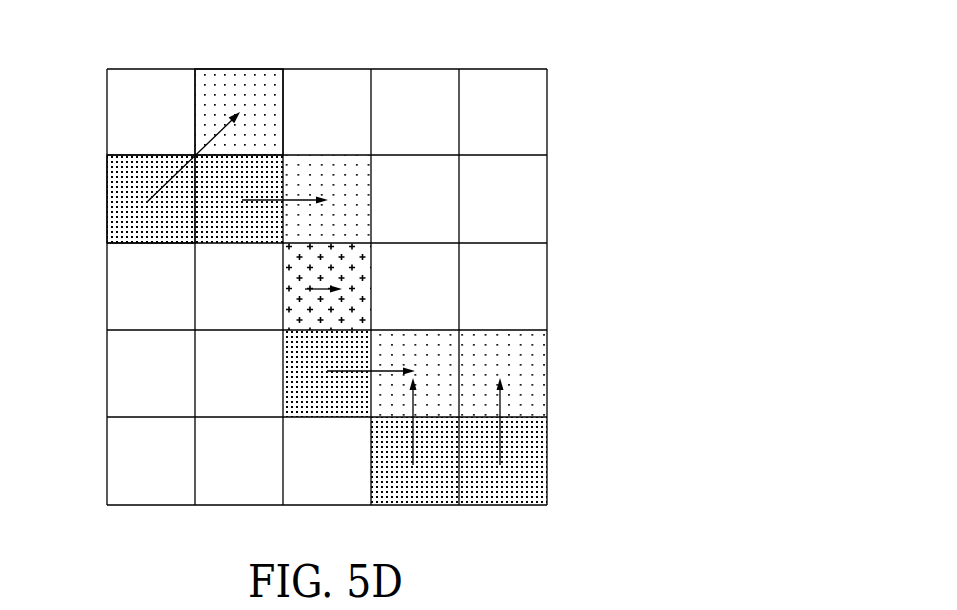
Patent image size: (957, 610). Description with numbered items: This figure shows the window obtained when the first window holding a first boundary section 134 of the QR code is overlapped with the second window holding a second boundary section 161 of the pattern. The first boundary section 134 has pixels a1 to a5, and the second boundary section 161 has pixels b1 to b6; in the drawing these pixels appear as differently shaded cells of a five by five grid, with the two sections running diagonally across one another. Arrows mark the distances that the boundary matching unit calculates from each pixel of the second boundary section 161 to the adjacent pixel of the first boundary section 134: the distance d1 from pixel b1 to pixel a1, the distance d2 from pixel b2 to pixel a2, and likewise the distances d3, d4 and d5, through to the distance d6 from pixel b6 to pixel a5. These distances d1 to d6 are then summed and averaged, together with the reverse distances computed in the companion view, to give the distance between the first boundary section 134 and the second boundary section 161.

The first boundary section 134 is at (195, 115).
The second boundary section 161 is at (107, 207).
The distance from pixel b1 to pixel a1 d1 is at (225, 133).
The distance from pixel b2 to pixel a2 d2 is at (268, 198).
The distance from pixel b3 to a pixel of the first boundary section d3 is at (320, 290).
The distance from pixel b4 to a pixel of the first boundary section d4 is at (383, 372).
The distance from pixel b5 to a pixel of the first boundary section d5 is at (413, 407).
The distance from pixel b6 to pixel a5 d6 is at (500, 405).